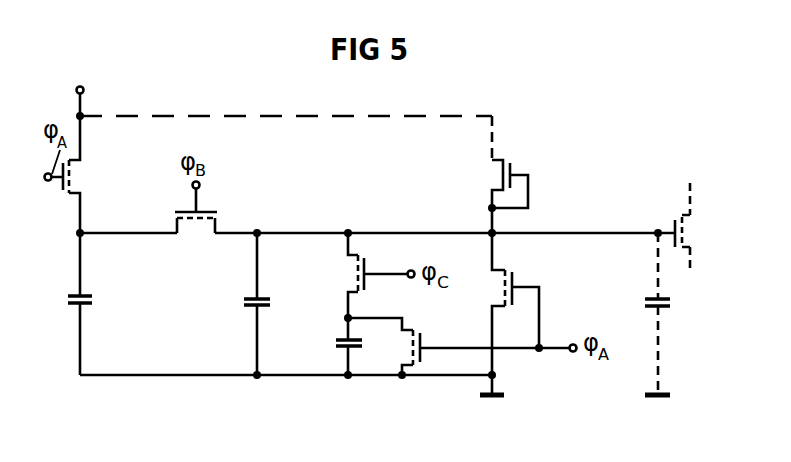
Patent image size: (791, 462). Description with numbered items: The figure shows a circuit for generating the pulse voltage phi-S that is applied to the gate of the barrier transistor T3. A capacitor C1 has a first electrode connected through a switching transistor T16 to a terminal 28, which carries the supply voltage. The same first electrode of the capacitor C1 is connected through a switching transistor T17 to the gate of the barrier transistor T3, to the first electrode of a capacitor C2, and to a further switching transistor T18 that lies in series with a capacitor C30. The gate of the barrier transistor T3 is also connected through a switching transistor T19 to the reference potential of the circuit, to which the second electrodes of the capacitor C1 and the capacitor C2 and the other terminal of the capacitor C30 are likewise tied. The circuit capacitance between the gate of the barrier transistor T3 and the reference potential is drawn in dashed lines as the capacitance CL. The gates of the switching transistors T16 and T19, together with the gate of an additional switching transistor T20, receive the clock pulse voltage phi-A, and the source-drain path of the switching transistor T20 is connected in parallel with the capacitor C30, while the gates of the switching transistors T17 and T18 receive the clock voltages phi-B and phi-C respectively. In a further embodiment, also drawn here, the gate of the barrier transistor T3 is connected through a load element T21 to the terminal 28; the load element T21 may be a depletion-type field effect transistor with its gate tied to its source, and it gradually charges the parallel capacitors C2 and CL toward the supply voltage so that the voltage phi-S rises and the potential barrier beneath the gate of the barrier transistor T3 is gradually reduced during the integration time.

The terminal 28 is at (276, 91).
The switching transistor T16 is at (79, 174).
The switching transistor T17 is at (196, 221).
The switching transistor T18 is at (366, 275).
The switching transistor T19 is at (518, 304).
The switching transistor T20 is at (462, 345).
The load element T21 is at (493, 174).
The barrier transistor T3 is at (675, 228).
The capacitor C1 is at (92, 304).
The capacitor C2 is at (270, 304).
The capacitor C30 is at (332, 344).
The circuit capacitance CL is at (669, 314).